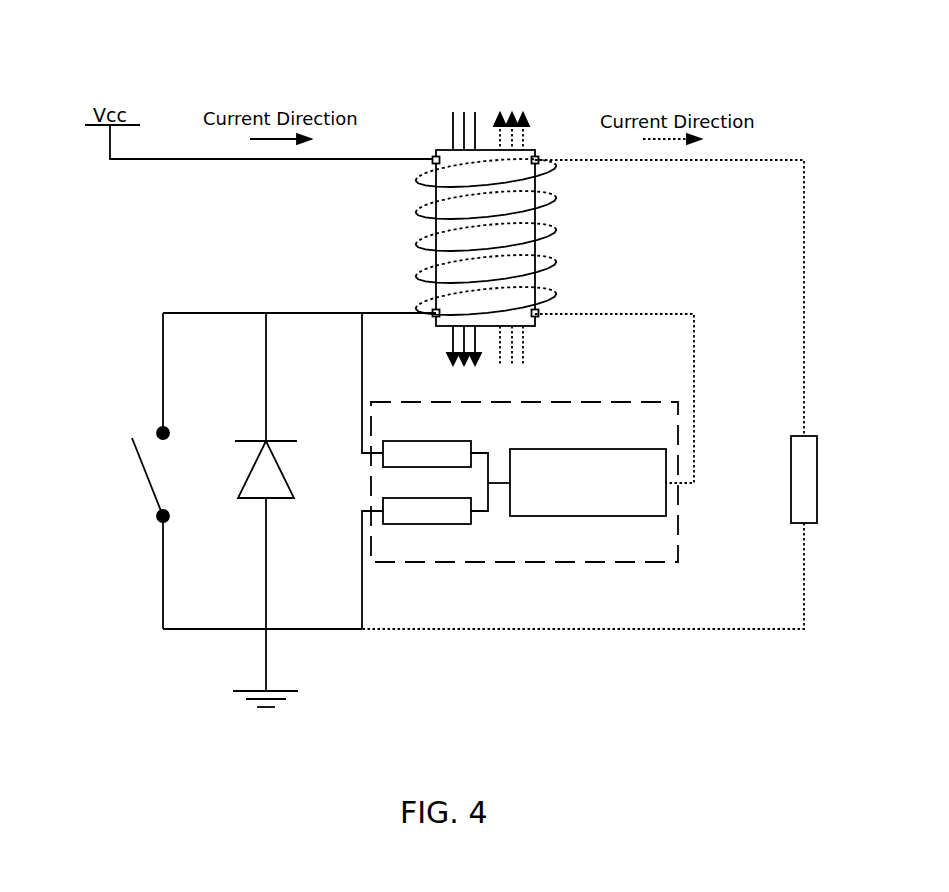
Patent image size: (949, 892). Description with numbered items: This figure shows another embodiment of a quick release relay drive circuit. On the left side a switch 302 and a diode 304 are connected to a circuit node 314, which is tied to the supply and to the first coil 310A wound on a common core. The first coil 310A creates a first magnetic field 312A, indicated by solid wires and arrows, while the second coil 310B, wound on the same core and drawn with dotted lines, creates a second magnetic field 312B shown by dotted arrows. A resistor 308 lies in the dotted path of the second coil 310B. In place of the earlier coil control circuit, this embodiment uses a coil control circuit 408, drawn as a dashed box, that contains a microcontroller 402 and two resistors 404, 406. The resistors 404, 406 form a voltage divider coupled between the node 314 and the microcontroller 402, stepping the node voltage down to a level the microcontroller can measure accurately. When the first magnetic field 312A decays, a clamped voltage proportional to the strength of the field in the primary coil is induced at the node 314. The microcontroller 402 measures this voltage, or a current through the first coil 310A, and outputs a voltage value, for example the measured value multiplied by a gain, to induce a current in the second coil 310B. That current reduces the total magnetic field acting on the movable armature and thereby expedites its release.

The switch 302 is at (157, 513).
The diode 304 is at (288, 481).
The resistor 308 is at (817, 452).
The first coil 310A is at (413, 252).
The second coil 310B is at (556, 224).
The first magnetic field 312A is at (451, 113).
The second magnetic field 312B is at (531, 113).
The circuit node 314 is at (205, 313).
The microcontroller 402 is at (588, 482).
The resistor 404 is at (440, 441).
The resistor 406 is at (442, 524).
The coil control circuit 408 is at (606, 402).